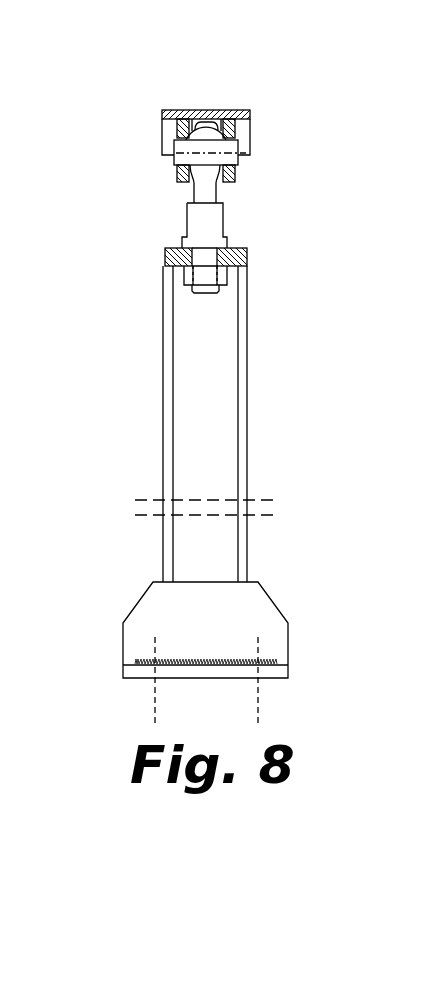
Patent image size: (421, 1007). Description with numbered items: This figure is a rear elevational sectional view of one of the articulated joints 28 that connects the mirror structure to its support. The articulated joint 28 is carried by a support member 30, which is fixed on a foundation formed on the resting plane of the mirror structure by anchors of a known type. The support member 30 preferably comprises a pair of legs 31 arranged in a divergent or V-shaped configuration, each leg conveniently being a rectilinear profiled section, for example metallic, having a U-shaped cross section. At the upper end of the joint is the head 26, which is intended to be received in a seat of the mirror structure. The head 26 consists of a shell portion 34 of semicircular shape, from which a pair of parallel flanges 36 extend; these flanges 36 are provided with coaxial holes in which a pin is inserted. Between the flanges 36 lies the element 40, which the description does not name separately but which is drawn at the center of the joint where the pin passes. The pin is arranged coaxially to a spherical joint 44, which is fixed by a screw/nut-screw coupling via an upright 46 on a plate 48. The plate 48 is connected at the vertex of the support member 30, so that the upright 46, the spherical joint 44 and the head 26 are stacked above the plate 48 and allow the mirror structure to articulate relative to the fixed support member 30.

The head 26 is at (224, 146).
The articulated joint 28 is at (253, 142).
The support member 30 is at (219, 494).
The legs 31 is at (165, 453).
The shell portion 34 is at (193, 112).
The flanges 36 is at (177, 124).
The ball member 40 is at (183, 160).
The spherical joint 44 is at (192, 183).
The upright 46 is at (213, 225).
The plate 48 is at (175, 255).